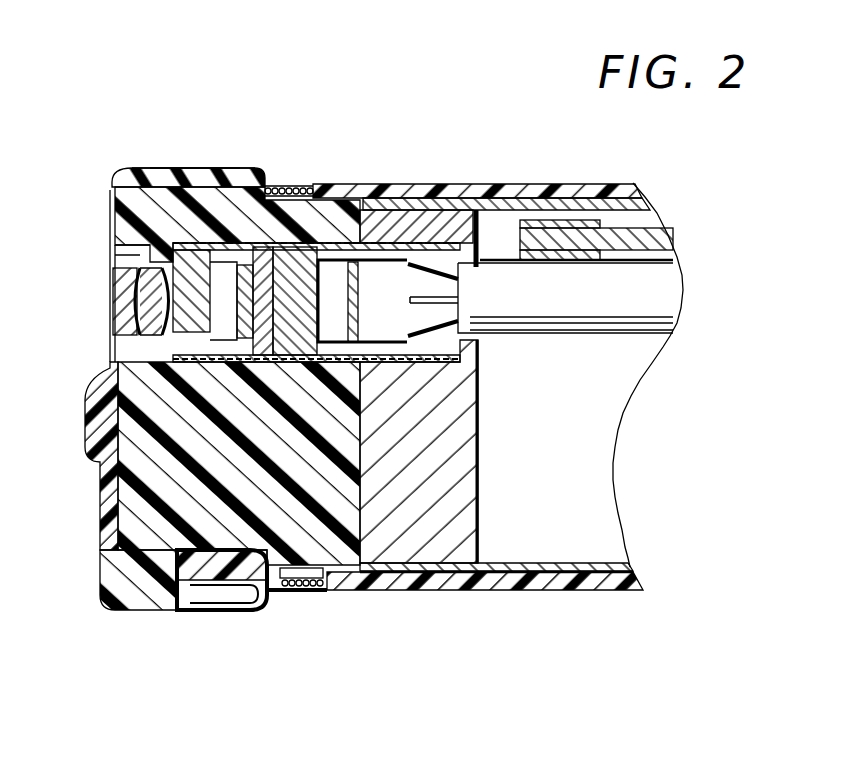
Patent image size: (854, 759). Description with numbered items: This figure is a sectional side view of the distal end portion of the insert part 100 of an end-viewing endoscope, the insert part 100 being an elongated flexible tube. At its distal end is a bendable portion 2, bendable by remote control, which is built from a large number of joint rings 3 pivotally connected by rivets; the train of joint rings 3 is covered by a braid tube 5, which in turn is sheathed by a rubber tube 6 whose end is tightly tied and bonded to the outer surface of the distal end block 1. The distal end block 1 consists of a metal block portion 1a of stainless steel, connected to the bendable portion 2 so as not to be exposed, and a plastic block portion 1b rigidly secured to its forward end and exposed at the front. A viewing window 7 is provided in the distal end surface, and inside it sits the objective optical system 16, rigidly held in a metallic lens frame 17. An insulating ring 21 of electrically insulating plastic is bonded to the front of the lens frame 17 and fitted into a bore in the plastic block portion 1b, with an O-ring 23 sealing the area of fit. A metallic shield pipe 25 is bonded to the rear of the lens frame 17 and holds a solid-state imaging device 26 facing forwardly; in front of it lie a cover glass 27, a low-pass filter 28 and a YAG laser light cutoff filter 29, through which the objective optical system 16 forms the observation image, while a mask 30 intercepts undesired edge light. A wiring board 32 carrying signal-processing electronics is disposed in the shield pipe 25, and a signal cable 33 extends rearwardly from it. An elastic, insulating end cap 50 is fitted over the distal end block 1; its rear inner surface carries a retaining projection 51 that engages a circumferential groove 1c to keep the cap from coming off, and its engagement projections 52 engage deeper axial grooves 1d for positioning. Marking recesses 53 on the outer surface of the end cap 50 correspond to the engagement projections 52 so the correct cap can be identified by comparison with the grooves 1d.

The distal end block 1 is at (298, 603).
The metal block portion 1a is at (442, 545).
The plastic block portion 1b is at (320, 555).
The circumferential groove 1c is at (209, 150).
The grooves 1d is at (177, 610).
The bendable portion 2 is at (590, 605).
The joint rings 3 is at (598, 562).
The braid tube 5 is at (633, 570).
The rubber tube 6 is at (613, 580).
The viewing window 7 is at (108, 293).
The objective optical system 16 is at (153, 167).
The lens frame 17 is at (225, 180).
The insulating ring 21 is at (130, 167).
The O-ring 23 is at (110, 223).
The shield pipe 25 is at (413, 240).
The solid-state imaging device 26 is at (340, 188).
The cover glass 27 is at (312, 188).
The low-pass filter 28 is at (293, 188).
The YAG laser light cutoff filter 29 is at (268, 180).
The mask 30 is at (257, 178).
The wiring board 32 is at (383, 265).
The signal cable 33 is at (500, 280).
The end cap 50 is at (127, 605).
The retaining projection 51 is at (208, 167).
The engagement projections 52 is at (167, 563).
The marking recesses 53 is at (227, 602).
The insert part 100 is at (653, 605).